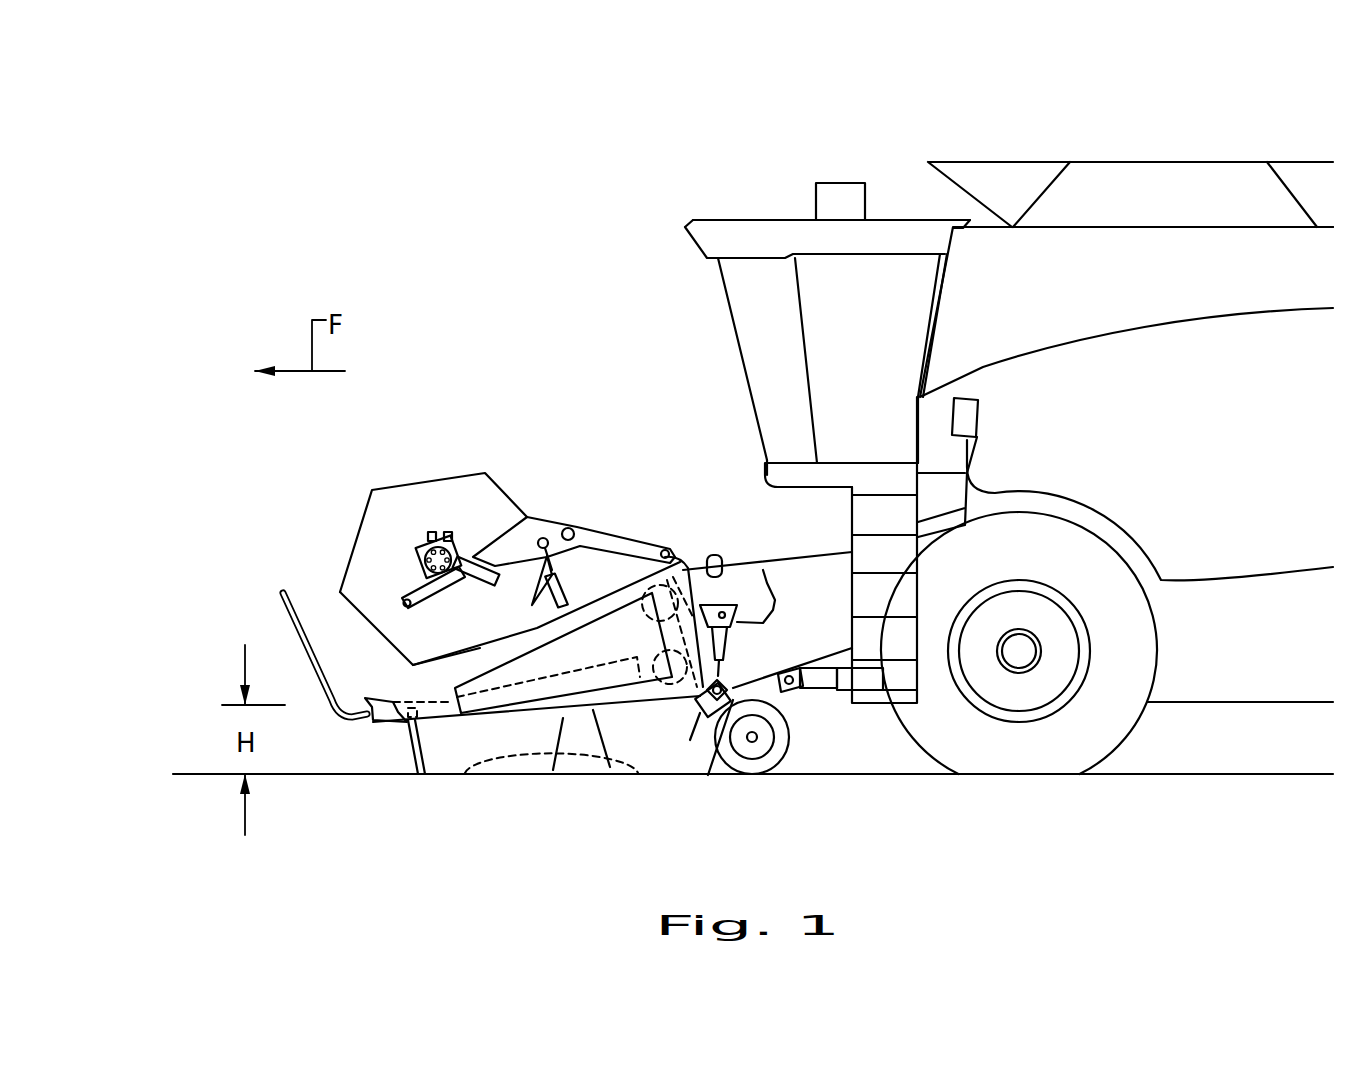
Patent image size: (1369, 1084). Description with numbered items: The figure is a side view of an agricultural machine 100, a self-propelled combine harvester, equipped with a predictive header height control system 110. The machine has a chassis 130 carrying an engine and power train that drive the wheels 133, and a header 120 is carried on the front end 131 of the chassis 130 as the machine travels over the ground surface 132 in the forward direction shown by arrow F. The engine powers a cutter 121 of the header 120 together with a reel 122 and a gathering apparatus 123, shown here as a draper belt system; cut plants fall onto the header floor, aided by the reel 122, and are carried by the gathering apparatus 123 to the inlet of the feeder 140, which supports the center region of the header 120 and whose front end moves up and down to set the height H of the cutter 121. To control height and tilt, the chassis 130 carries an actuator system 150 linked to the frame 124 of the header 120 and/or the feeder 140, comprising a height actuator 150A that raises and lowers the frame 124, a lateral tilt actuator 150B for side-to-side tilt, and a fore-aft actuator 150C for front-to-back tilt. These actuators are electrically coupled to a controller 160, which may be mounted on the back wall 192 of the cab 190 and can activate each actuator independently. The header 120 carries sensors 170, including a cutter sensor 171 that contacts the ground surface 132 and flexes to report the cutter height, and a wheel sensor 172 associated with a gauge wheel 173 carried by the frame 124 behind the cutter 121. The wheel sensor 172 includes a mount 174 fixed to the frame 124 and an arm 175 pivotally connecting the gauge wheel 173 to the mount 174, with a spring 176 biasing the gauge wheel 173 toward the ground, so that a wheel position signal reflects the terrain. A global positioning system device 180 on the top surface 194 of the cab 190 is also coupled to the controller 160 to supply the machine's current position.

The agricultural machine 100 is at (1116, 143).
The predictive header height control system 110 is at (742, 488).
The header 120 is at (605, 592).
The cutter 121 is at (428, 710).
The reel 122 is at (438, 478).
The gathering apparatus 123 is at (553, 770).
The frame 124 is at (610, 767).
The chassis 130 is at (1245, 703).
The front end 131 is at (965, 505).
The ground surface 132 is at (200, 773).
The wheels 133 is at (1133, 730).
The feeder 140 is at (817, 668).
The actuator system 150 is at (742, 563).
The height actuator 150A is at (843, 690).
The lateral tilt actuator 150B is at (730, 573).
The fore-aft actuator 150C is at (683, 555).
The controller 160 is at (955, 417).
The sensors 170 is at (690, 713).
The cutter sensor 171 is at (410, 757).
The wheel sensor 172 is at (693, 712).
The gauge wheel 173 is at (708, 775).
The mount 174 is at (720, 687).
The arm 175 is at (680, 742).
The spring 176 is at (723, 647).
The global positioning system device 180 is at (830, 182).
The cab 190 is at (717, 298).
The back wall 192 is at (979, 447).
The top surface 194 is at (707, 218).